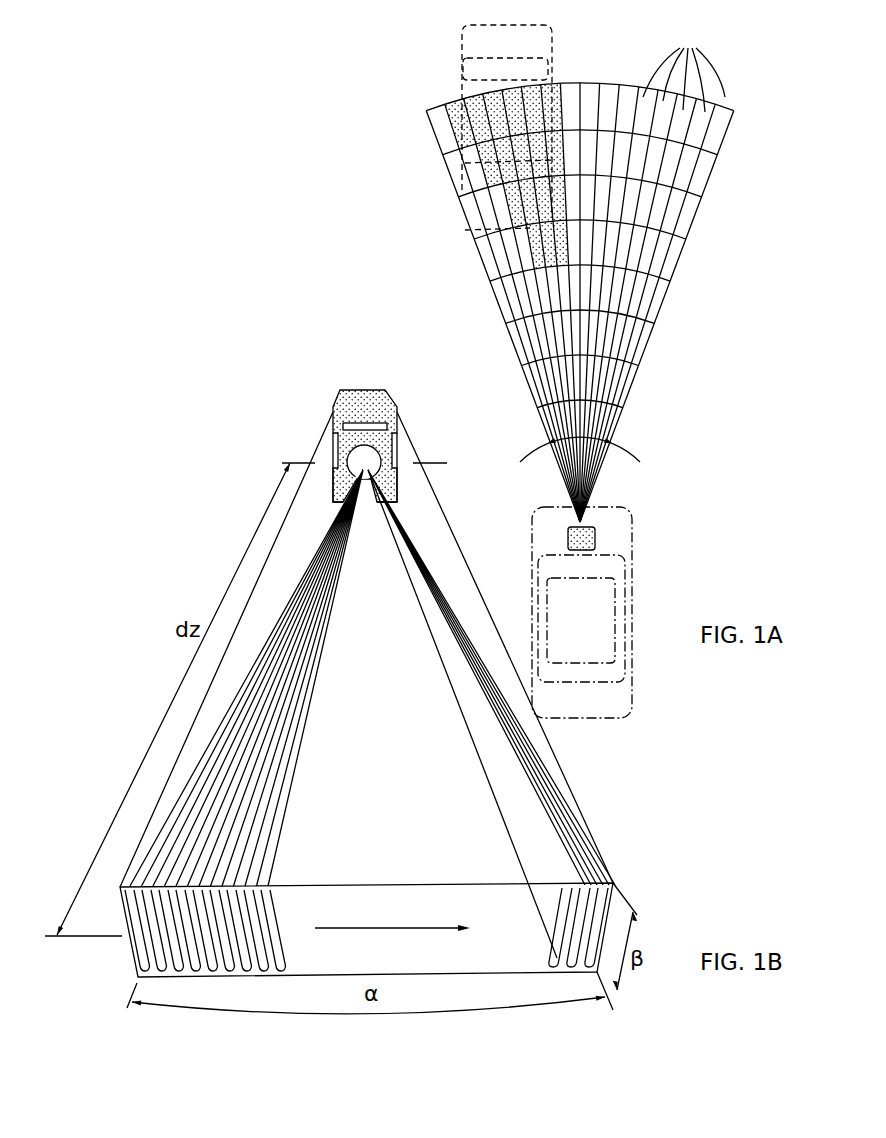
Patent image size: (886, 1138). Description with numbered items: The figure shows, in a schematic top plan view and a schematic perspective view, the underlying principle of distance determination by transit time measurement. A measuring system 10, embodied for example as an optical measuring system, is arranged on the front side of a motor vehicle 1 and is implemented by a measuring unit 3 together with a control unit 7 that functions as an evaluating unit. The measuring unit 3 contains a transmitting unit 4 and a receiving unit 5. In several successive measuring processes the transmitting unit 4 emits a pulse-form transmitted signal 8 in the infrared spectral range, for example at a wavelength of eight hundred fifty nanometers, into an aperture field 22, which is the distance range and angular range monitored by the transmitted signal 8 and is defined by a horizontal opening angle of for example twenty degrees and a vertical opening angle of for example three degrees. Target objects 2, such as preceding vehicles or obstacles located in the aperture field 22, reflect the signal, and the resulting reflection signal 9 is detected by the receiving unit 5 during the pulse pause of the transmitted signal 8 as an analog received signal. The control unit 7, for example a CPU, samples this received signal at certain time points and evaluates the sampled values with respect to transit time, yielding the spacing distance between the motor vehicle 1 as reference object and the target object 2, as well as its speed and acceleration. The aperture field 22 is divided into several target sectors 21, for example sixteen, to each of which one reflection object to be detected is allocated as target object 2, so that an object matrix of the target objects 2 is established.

In FIG. 1A, the motor vehicle 1 is at (632, 589).
In FIG. 1A, the target object 2 is at (553, 35).
In FIG. 1A, the measuring unit 3 is at (598, 532).
In FIG. 1B, the measuring unit 3 is at (331, 423).
In FIG. 1B, the transmitting unit 4 is at (380, 427).
In FIG. 1B, the receiving unit 5 is at (375, 463).
In FIG. 1B, the control unit 7 is at (372, 424).
In FIG. 1B, the transmitted signal 8 is at (556, 754).
In FIG. 1A, the reflection signal 9 is at (505, 276).
In FIG. 1B, the reflection signal 9 is at (471, 735).
In FIG. 1A, the measuring system 10 is at (565, 540).
In FIG. 1B, the measuring system 10 is at (335, 390).
In FIG. 1A, the target sectors 21 is at (684, 66).
In FIG. 1B, the target sectors 21 is at (280, 900).
In FIG. 1A, the aperture field 22 is at (397, 73).
In FIG. 1B, the aperture field 22 is at (406, 883).